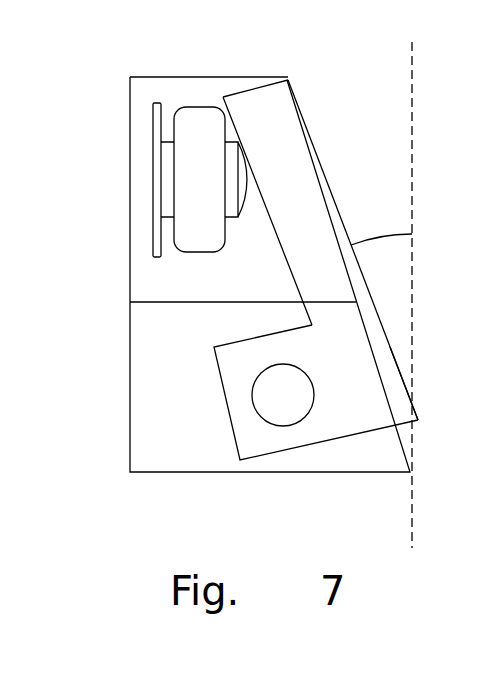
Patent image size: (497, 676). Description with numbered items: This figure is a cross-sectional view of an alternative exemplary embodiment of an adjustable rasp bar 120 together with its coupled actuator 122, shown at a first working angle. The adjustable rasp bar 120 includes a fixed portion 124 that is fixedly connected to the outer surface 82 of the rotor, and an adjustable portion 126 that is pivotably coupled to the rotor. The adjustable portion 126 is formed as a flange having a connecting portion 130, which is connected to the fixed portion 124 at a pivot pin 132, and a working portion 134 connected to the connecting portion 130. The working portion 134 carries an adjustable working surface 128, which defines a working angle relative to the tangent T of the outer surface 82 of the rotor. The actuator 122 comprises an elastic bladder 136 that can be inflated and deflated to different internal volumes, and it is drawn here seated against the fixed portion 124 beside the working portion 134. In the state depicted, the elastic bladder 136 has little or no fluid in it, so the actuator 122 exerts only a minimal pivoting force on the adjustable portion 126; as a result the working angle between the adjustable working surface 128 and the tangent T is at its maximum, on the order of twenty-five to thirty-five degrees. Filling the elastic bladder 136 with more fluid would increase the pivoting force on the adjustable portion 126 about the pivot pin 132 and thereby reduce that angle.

The adjustable rasp bar 120 is at (262, 297).
The actuator 122 is at (141, 133).
The fixed portion 124 is at (129, 405).
The adjustable portion 126 is at (390, 347).
The adjustable working surface 128 is at (320, 157).
The connecting portion 130 is at (333, 436).
The pivot pin 132 is at (262, 416).
The working portion 134 is at (273, 125).
The elastic bladder 136 is at (196, 110).
The outer surface 82 is at (465, 385).
The tangent T is at (413, 275).